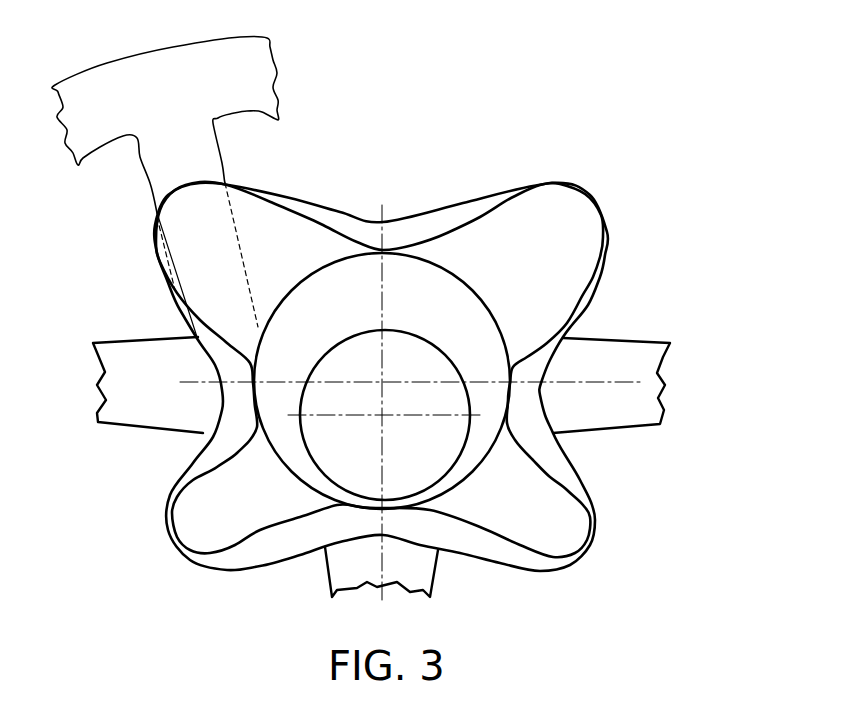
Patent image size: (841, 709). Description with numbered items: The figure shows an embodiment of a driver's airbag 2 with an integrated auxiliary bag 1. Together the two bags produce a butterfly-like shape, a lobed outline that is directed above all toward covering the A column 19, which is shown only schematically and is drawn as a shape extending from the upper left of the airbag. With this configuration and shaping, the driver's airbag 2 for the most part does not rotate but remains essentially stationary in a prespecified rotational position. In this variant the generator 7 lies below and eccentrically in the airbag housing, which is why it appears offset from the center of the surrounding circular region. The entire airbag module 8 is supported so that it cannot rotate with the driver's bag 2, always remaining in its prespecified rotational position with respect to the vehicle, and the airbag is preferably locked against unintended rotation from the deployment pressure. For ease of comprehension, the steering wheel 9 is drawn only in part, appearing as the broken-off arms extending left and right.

The integrated auxiliary bag 1 is at (475, 218).
The driver's airbag 2 is at (598, 277).
The generator 7 is at (425, 492).
The airbag module 8 is at (292, 298).
The steering wheel 9 is at (625, 418).
The A column 19 is at (207, 170).